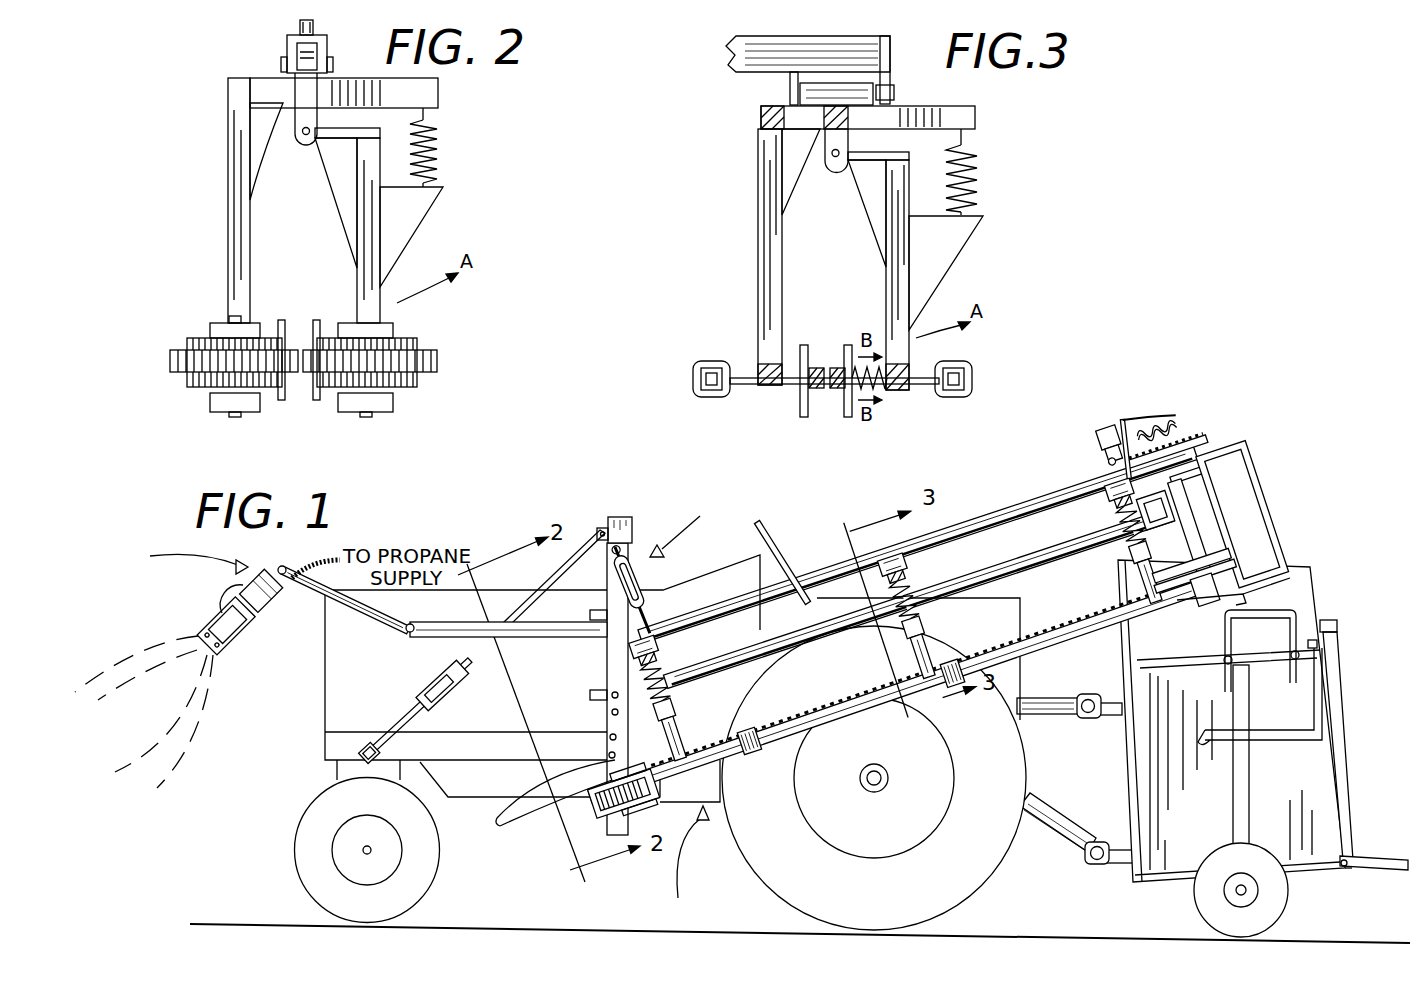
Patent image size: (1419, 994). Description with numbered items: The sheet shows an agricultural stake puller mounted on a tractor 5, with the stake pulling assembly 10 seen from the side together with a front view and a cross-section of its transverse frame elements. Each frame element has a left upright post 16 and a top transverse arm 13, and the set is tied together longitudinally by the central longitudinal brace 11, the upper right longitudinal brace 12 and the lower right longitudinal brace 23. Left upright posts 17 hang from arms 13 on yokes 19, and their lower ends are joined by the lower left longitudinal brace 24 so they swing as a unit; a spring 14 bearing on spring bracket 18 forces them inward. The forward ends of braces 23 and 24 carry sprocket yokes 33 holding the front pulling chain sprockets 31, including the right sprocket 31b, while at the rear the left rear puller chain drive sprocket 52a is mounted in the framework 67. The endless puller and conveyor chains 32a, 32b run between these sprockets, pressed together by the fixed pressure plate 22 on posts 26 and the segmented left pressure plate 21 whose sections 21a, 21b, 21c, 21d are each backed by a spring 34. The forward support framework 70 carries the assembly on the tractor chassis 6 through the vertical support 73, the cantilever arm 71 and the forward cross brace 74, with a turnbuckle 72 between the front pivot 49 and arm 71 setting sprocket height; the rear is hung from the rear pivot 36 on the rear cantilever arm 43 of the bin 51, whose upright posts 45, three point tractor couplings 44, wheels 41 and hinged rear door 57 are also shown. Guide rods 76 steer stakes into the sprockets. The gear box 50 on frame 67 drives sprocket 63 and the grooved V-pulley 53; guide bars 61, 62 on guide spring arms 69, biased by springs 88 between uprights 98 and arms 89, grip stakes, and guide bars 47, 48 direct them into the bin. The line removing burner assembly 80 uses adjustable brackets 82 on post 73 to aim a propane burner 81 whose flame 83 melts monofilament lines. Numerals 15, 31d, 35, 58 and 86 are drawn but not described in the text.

In FIG. 1, the tractor 5 is at (342, 666).
In FIG. 1, the tractor chassis 6 is at (411, 762).
In FIG. 1, the stake pulling assembly 10 is at (688, 860).
In FIG. 3, the central longitudinal brace 11 is at (852, 136).
In FIG. 1, the central longitudinal brace 11 is at (802, 556).
In FIG. 3, the upper right longitudinal brace 12 is at (761, 120).
In FIG. 1, the upper right longitudinal brace 12 is at (886, 580).
In FIG. 2, the top transverse arm 13 is at (438, 100).
In FIG. 3, the top transverse arm 13 is at (975, 120).
In FIG. 1, the top transverse arm 13 is at (651, 640).
In FIG. 2, the spring 14 is at (436, 146).
In FIG. 3, the spring 14 is at (978, 188).
In FIG. 1, the spring 14 is at (676, 684).
In FIG. 1, the lower beam 15 is at (738, 645).
In FIG. 2, the left upright post 16 is at (230, 220).
In FIG. 3, the left upright post 16 is at (760, 280).
In FIG. 2, the left upright post 17 is at (358, 294).
In FIG. 3, the left upright post 17 is at (888, 298).
In FIG. 1, the left upright post 17 is at (676, 746).
In FIG. 2, the spring bracket 18 is at (424, 232).
In FIG. 3, the spring bracket 18 is at (962, 252).
In FIG. 1, the spring bracket 18 is at (680, 708).
In FIG. 2, the yoke 19 is at (302, 142).
In FIG. 3, the yoke 19 is at (828, 162).
In FIG. 2, the left pressure plate 21 is at (317, 318).
In FIG. 3, the left pressure plate 21 is at (848, 343).
In FIG. 1, the left pressure plate section 21a is at (710, 732).
In FIG. 1, the left pressure plate section 21b is at (766, 722).
In FIG. 1, the left pressure plate section 21c is at (826, 704).
In FIG. 1, the left pressure plate section 21d is at (954, 660).
In FIG. 2, the pressure plate 22 is at (282, 318).
In FIG. 3, the pressure plate 22 is at (804, 343).
In FIG. 3, the lower right longitudinal brace 23 is at (758, 366).
In FIG. 3, the lower left longitudinal brace 24 is at (909, 368).
In FIG. 1, the lower left longitudinal brace 24 is at (854, 708).
In FIG. 3, the post 26 is at (786, 386).
In FIG. 1, the front pulling chain sprocket 31 is at (604, 806).
In FIG. 2, the right front puller chain sprocket 31b is at (198, 385).
In FIG. 2, the sprocket 31d is at (410, 390).
In FIG. 2, the endless puller and conveyor chain 32a is at (437, 355).
In FIG. 3, the endless puller and conveyor chain 32a is at (970, 386).
In FIG. 1, the endless puller and conveyor chain 32a is at (810, 726).
In FIG. 2, the endless puller and conveyor chain 32b is at (178, 350).
In FIG. 3, the endless puller and conveyor chain 32b is at (710, 397).
In FIG. 2, the sprocket yoke 33 is at (245, 418).
In FIG. 1, the sprocket yoke 33 is at (642, 799).
In FIG. 3, the spring 34 is at (888, 392).
In FIG. 3, the bearing 35 is at (712, 360).
In FIG. 1, the bearing 35 is at (756, 758).
In FIG. 3, the rear pivot 36 is at (882, 80).
In FIG. 1, the rear pivot 36 is at (1140, 424).
In FIG. 1, the wheel 41 is at (1298, 889).
In FIG. 3, the rear cantilever arm 43 is at (730, 58).
In FIG. 1, the rear cantilever arm 43 is at (1104, 424).
In FIG. 1, the three point tractor coupling 44 is at (1090, 720).
In FIG. 1, the upright post 45 is at (1124, 668).
In FIG. 1, the guide bar 47 is at (1280, 620).
In FIG. 1, the guide bar 48 is at (1307, 740).
In FIG. 2, the front pivot 49 is at (316, 52).
In FIG. 1, the gear box 50 is at (1152, 539).
In FIG. 1, the bin 51 is at (1335, 780).
In FIG. 1, the left rear puller chain drive sprocket 52a is at (1288, 572).
In FIG. 1, the grooved V-pulley 53 is at (1187, 610).
In FIG. 1, the rear door 57 is at (1342, 642).
In FIG. 3, the nut 58 is at (894, 92).
In FIG. 1, the nut 58 is at (1104, 460).
In FIG. 1, the guide bar 61 is at (1176, 560).
In FIG. 1, the guide bar 62 is at (1220, 602).
In FIG. 1, the sprocket 63 is at (1198, 444).
In FIG. 1, the framework 67 is at (1245, 500).
In FIG. 1, the guide spring arm 69 is at (1248, 470).
In FIG. 1, the forward support framework 70 is at (685, 526).
In FIG. 1, the cantilever arm 71 is at (632, 530).
In FIG. 2, the turnbuckle 72 is at (286, 46).
In FIG. 1, the turnbuckle 72 is at (650, 575).
In FIG. 1, the vertical support 73 is at (607, 680).
In FIG. 1, the forward cross brace 74 is at (550, 573).
In FIG. 1, the guide rod 76 is at (498, 826).
In FIG. 1, the line removing burner assembly 80 is at (262, 591).
In FIG. 1, the propane burner 81 is at (240, 634).
In FIG. 1, the adjustable bracket 82 is at (407, 632).
In FIG. 1, the flame 83 is at (200, 706).
In FIG. 1, the arm 86 is at (1075, 763).
In FIG. 1, the spring 88 is at (1154, 420).
In FIG. 1, the arm 89 is at (1124, 418).
In FIG. 1, the transport support arm upright 98 is at (1198, 438).